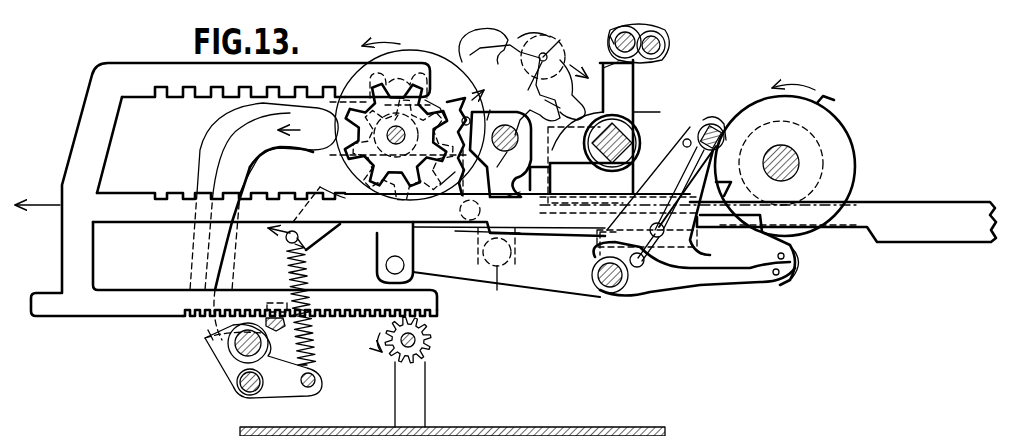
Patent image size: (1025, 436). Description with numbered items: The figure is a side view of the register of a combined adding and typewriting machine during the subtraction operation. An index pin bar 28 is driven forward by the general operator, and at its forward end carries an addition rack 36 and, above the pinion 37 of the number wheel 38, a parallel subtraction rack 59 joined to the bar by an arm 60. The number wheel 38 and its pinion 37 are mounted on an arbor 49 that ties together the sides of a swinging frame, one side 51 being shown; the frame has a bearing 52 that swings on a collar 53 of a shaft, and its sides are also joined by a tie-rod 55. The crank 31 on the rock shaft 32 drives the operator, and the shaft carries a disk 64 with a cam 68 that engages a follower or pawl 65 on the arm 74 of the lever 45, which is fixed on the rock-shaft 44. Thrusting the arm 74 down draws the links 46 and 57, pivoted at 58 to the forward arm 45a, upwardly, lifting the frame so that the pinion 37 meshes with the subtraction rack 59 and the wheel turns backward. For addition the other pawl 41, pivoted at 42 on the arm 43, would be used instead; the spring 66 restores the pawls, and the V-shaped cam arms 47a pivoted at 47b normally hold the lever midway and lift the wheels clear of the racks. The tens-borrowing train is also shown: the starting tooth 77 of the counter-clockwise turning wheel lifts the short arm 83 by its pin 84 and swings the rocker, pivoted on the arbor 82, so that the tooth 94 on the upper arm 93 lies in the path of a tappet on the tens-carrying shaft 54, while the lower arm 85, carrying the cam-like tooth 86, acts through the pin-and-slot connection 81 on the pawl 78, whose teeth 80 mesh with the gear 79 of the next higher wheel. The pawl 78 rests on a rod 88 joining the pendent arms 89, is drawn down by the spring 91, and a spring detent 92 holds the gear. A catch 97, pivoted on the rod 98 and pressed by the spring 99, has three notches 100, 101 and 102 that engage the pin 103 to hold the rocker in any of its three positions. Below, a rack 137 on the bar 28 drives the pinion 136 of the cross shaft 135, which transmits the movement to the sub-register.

The index pin bar 28 is at (555, 219).
The crank 31 is at (660, 191).
The rock shaft 32 is at (800, 163).
The addition rack 36 is at (166, 192).
The pinion 37 is at (318, 153).
The number wheel 38 is at (360, 55).
The rider or pawl 41 is at (716, 125).
The pivot 42 is at (705, 128).
The arm 43 is at (673, 206).
The rock-shaft 44 is at (609, 282).
The lever 45 is at (640, 267).
The forwardly extending arm 45a is at (581, 255).
The link 46 is at (408, 249).
The cam lever or arm 47a is at (444, 181).
The pivot 47b is at (319, 283).
The arbor 49 is at (400, 142).
The side of swinging frame 51 is at (205, 147).
The bearing or socket 52 is at (636, 114).
The collar 53 is at (596, 160).
The shaft 54 is at (600, 136).
The tie-rod 55 is at (665, 38).
The link 57 is at (428, 105).
The pivot 58 is at (386, 265).
The subtraction rack 59 is at (188, 98).
The arm 60 is at (82, 128).
The disk 64 is at (792, 163).
The follower or pawl 65 is at (800, 262).
The spring 66 is at (648, 240).
The cam 68 is at (821, 100).
The arm 74 is at (747, 250).
The starting tooth 77 is at (479, 85).
The pawl 78 is at (696, 260).
The gear 79 is at (322, 92).
The teeth 80 is at (319, 196).
The pin-and-slot connection 81 is at (475, 237).
The arbor 82 is at (494, 169).
The short arm 83 is at (498, 103).
The pin 84 is at (461, 147).
The lower arm 85 is at (500, 191).
The cam-like tooth 86 is at (522, 178).
The rod 88 is at (504, 258).
The arm 89 is at (498, 288).
The spring 91 is at (290, 252).
The spring detent 92 is at (242, 140).
The upper arm 93 is at (555, 90).
The tooth 94 is at (537, 100).
The catch 97 is at (470, 34).
The rod 98 is at (653, 38).
The spring 99 is at (631, 37).
The notch 100 is at (515, 90).
The notch 101 is at (529, 25).
The notch 102 is at (550, 45).
The pin 103 is at (515, 77).
The cross shaft 135 is at (418, 337).
The driving pinion 136 is at (428, 348).
The rack 137 is at (310, 302).